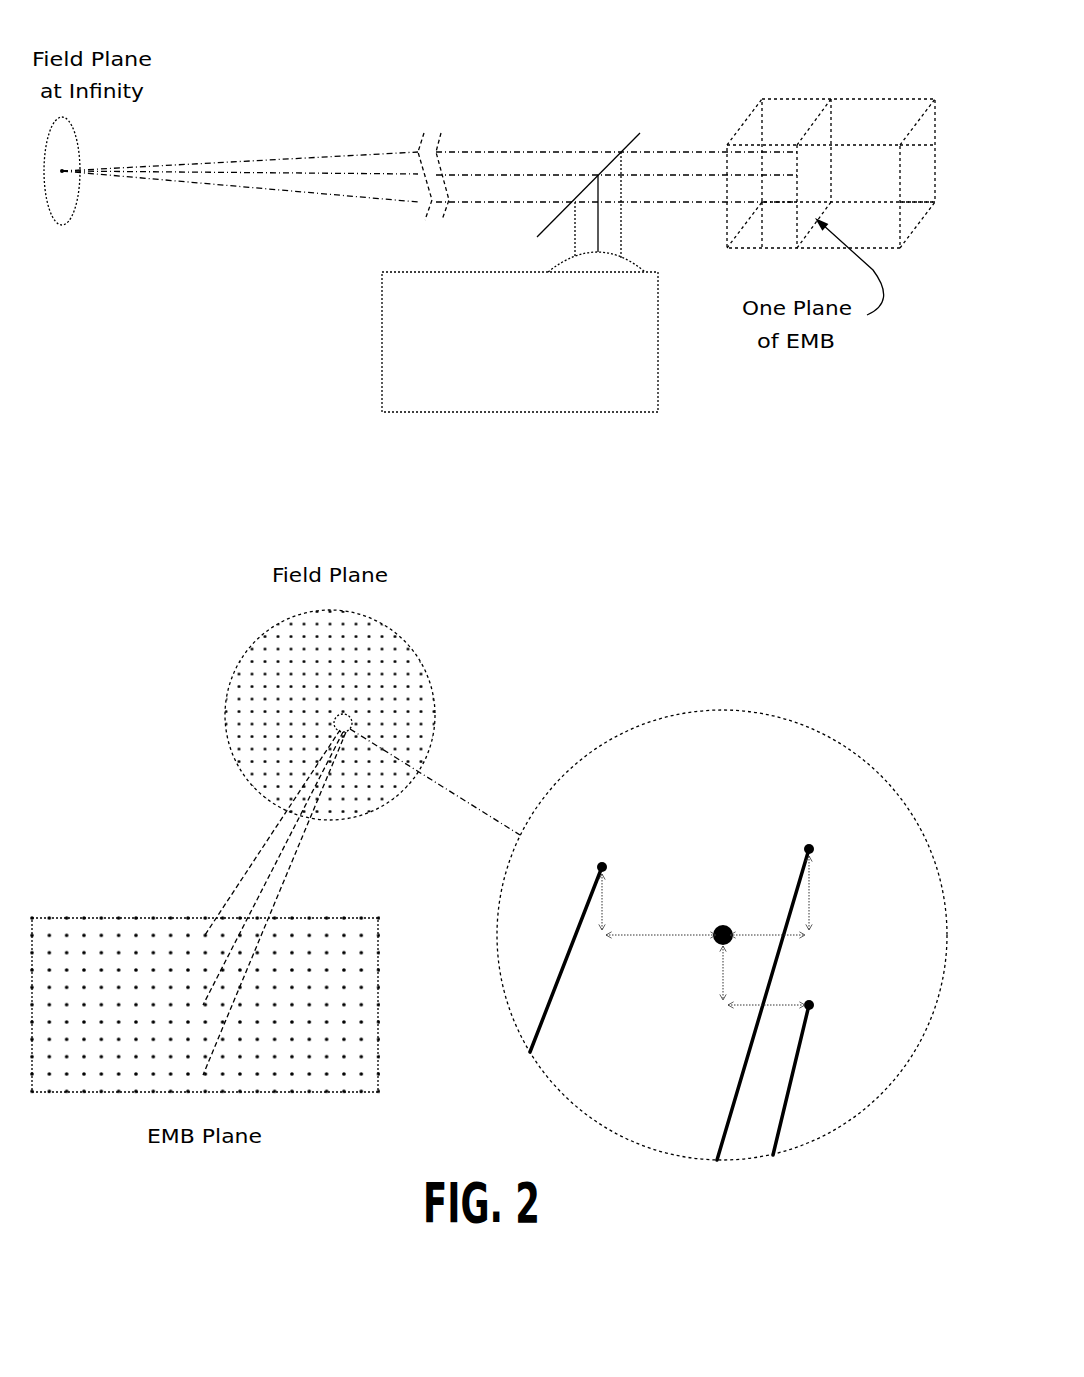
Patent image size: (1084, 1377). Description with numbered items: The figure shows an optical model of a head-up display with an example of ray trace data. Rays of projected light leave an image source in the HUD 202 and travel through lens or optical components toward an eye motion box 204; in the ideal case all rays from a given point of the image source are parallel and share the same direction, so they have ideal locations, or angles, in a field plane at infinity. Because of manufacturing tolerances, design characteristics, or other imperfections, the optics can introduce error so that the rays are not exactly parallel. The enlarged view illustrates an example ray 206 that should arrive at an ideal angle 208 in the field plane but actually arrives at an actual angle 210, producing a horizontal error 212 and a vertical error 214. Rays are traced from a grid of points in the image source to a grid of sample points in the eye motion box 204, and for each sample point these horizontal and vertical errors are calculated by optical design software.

The HUD 202 is at (547, 377).
The eye motion box 204 is at (901, 92).
The ray 206 is at (506, 945).
The ideal angle 208 is at (738, 914).
The actual angle 210 is at (609, 850).
The horizontal error 212 is at (705, 970).
The vertical error 214 is at (705, 928).